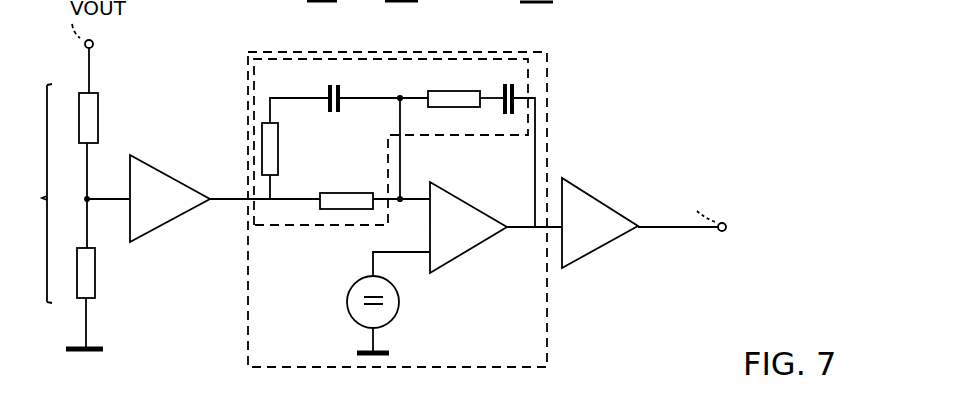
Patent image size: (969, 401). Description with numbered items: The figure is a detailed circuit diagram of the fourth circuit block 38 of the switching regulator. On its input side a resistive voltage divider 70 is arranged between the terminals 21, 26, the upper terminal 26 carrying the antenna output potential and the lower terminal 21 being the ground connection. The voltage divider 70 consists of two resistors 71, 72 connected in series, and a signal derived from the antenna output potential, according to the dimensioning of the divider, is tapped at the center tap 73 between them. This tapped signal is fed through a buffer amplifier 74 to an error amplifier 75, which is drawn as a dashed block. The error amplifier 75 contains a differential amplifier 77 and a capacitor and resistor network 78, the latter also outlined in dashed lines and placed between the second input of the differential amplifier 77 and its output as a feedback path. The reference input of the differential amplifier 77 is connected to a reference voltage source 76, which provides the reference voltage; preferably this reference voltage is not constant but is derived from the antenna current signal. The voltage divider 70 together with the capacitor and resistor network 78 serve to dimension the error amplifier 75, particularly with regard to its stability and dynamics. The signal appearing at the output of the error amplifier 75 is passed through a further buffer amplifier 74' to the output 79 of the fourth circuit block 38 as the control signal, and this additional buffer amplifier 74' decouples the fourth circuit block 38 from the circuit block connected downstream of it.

The terminal 21 is at (92, 345).
The terminal 26 is at (96, 46).
The fourth circuit block 38 is at (680, 105).
The voltage divider 70 is at (32, 193).
The resistor 71 is at (100, 116).
The resistor 72 is at (97, 275).
The center tap 73 is at (78, 198).
The buffer amplifier 74 is at (200, 208).
The buffer amplifier 74' is at (600, 239).
The error amplifier 75 is at (547, 335).
The reference voltage source 76 is at (336, 298).
The differential amplifier 77 is at (475, 196).
The capacitor and resistor network 78 is at (529, 74).
The output 79 is at (687, 232).